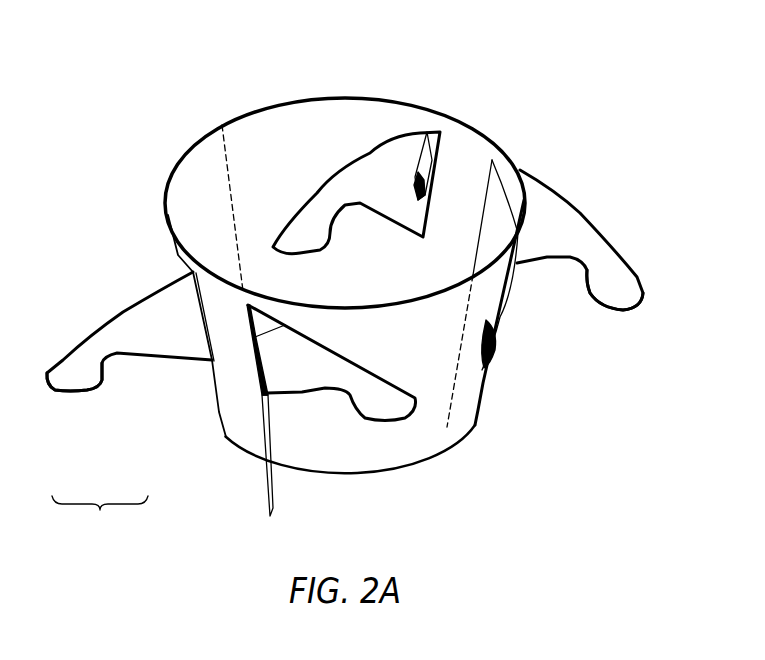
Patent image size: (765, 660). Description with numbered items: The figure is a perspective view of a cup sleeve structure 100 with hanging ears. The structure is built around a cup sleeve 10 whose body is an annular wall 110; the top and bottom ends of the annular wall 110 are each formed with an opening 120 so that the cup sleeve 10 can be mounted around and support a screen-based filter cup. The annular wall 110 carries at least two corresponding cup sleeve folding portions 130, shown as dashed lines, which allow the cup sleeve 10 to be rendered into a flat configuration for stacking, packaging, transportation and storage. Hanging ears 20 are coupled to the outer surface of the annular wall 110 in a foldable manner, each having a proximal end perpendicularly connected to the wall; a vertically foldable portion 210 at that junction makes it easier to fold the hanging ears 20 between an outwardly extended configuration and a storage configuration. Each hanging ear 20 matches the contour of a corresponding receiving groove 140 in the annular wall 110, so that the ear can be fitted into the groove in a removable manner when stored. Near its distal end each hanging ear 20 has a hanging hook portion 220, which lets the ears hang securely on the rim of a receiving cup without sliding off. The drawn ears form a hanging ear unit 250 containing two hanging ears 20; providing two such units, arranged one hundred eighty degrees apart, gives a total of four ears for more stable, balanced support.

The cup sleeve structure 100 is at (660, 40).
The cup sleeve 10 is at (333, 93).
The annular wall 110 is at (473, 390).
The opening 120 is at (445, 232).
The cup sleeve folding portion 130 is at (224, 150).
The receiving groove 140 is at (377, 178).
The hanging ear 20 is at (602, 250).
The vertically foldable portion 210 is at (199, 331).
The hanging hook portion 220 is at (583, 268).
The hanging ear unit 250 is at (100, 516).